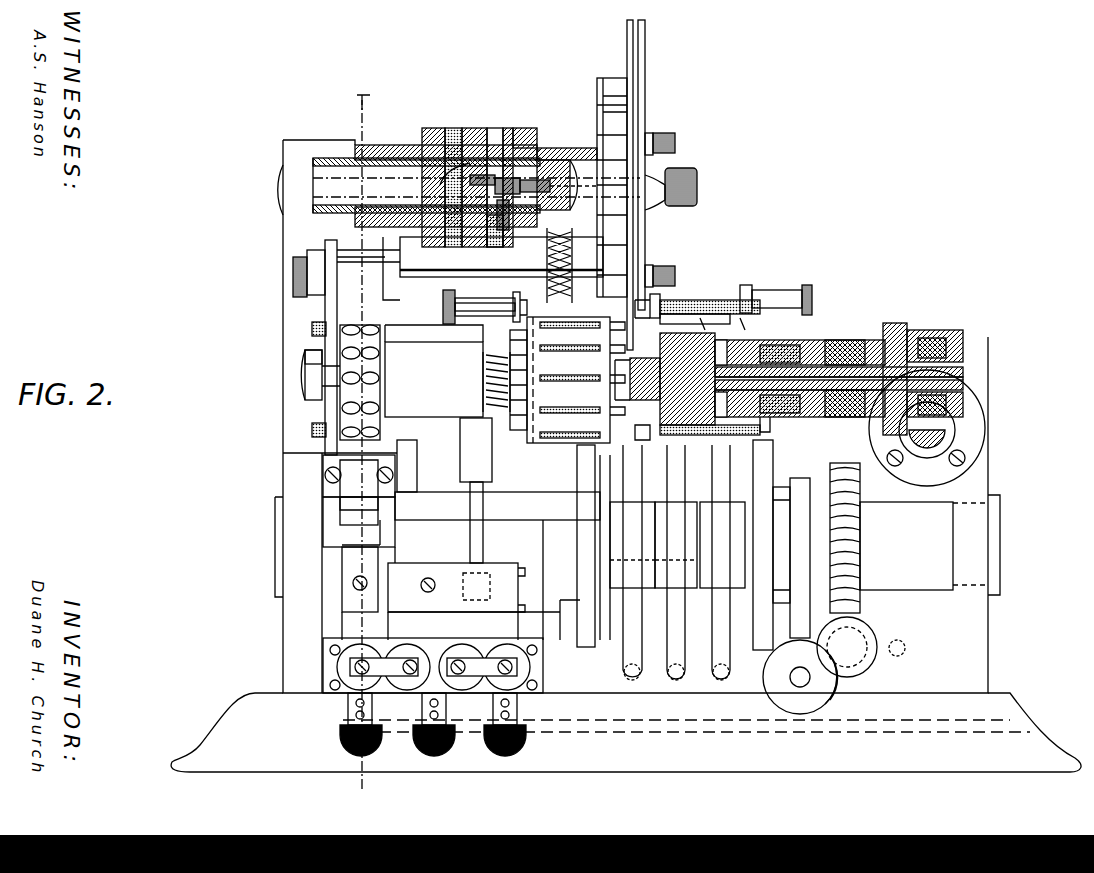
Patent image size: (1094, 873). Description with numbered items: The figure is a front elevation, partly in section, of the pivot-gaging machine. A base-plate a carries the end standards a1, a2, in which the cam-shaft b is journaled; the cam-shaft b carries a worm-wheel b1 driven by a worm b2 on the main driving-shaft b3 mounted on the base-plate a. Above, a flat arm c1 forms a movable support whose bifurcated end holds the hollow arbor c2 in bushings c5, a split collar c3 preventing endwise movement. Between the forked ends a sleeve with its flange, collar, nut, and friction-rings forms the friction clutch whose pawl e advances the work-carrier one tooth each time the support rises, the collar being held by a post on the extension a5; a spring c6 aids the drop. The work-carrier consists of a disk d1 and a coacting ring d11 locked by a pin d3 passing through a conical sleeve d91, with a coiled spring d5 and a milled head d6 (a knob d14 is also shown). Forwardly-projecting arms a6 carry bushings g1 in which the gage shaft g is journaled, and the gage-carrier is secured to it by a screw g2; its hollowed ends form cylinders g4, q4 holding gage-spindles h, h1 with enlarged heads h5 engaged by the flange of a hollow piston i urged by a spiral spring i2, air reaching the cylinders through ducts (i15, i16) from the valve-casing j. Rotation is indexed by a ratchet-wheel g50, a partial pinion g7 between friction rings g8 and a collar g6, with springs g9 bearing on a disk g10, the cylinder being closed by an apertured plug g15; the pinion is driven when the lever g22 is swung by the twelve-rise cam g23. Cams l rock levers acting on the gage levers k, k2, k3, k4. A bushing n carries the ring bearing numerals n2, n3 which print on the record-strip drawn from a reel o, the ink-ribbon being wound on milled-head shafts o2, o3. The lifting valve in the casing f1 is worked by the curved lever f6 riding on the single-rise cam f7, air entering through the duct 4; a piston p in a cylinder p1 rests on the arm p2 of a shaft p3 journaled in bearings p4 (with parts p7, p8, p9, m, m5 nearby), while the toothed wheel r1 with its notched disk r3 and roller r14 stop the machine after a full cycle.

The base-plate a is at (262, 705).
The end standard a1 is at (290, 570).
The end standard a2 is at (978, 628).
The forwardly-projecting extension or block a5 is at (493, 268).
The arm a6 is at (434, 371).
The flat plate or arm c1 is at (358, 146).
The transverse hollow shaft or arbor c2 is at (476, 185).
The split collar c3 is at (374, 189).
The bushing c5 is at (397, 145).
The spring c6 is at (570, 265).
The pawl e is at (530, 128).
The disk d1 is at (627, 39).
The coacting ring d11 is at (645, 58).
The knob d14 is at (677, 209).
The milled head d6 is at (697, 187).
The pin d3 is at (610, 183).
The coiled spring d5 is at (530, 212).
The conical sleeve d91 is at (567, 179).
The reel o is at (352, 235).
The ink-ribbon shaft o2 is at (312, 432).
The ink-ribbon shaft o3 is at (312, 328).
The bushing n is at (698, 312).
The numerals n2 is at (305, 395).
The numerals n3 is at (372, 353).
The shaft g is at (305, 380).
The bushing g1 is at (860, 418).
The screw g2 is at (627, 366).
The cylinder g4 is at (718, 312).
The collar g6 is at (963, 406).
The partial pinion g7 is at (935, 330).
The friction disk or ring g8 is at (920, 335).
The spring g9 is at (950, 340).
The disk g10 is at (965, 345).
The apertured plug g15 is at (965, 458).
The lever g22 is at (730, 703).
The cam g23 is at (738, 500).
The ratchet-wheel g50 is at (900, 330).
The gage-spindle h is at (567, 380).
The gage-spindle h1 is at (492, 360).
The enlarged head h5 is at (703, 445).
The hollow piston i is at (858, 345).
The spiral spring i2 is at (780, 420).
The rod i15 is at (678, 703).
The rod i16 is at (673, 485).
The rod k is at (490, 306).
The rod k2 is at (826, 294).
The collar k3 is at (520, 297).
The knob k4 is at (443, 298).
The cam l is at (600, 488).
The shaft b is at (565, 500).
The worm-wheel b1 is at (906, 546).
The worm b2 is at (870, 635).
The main driving-shaft b3 is at (902, 649).
The piston p is at (470, 505).
The cylinder p1 is at (476, 490).
The inwardly-projecting arm p2 is at (745, 318).
The shaft p3 is at (525, 585).
The bearing p4 is at (415, 575).
The block p7 is at (340, 528).
The plate p8 is at (348, 478).
The block p9 is at (348, 496).
The cylinder q4 is at (417, 470).
The valve-casing j is at (330, 613).
The magnet coil m is at (433, 664).
The terminal m5 is at (433, 724).
The ratchet or toothed wheel r1 is at (788, 575).
The disk r3 is at (805, 485).
The roller r14 is at (805, 690).
The valve-casing f1 is at (613, 676).
The curved lever f6 is at (640, 612).
The cam f7 is at (625, 470).
The duct 4 is at (1008, 722).